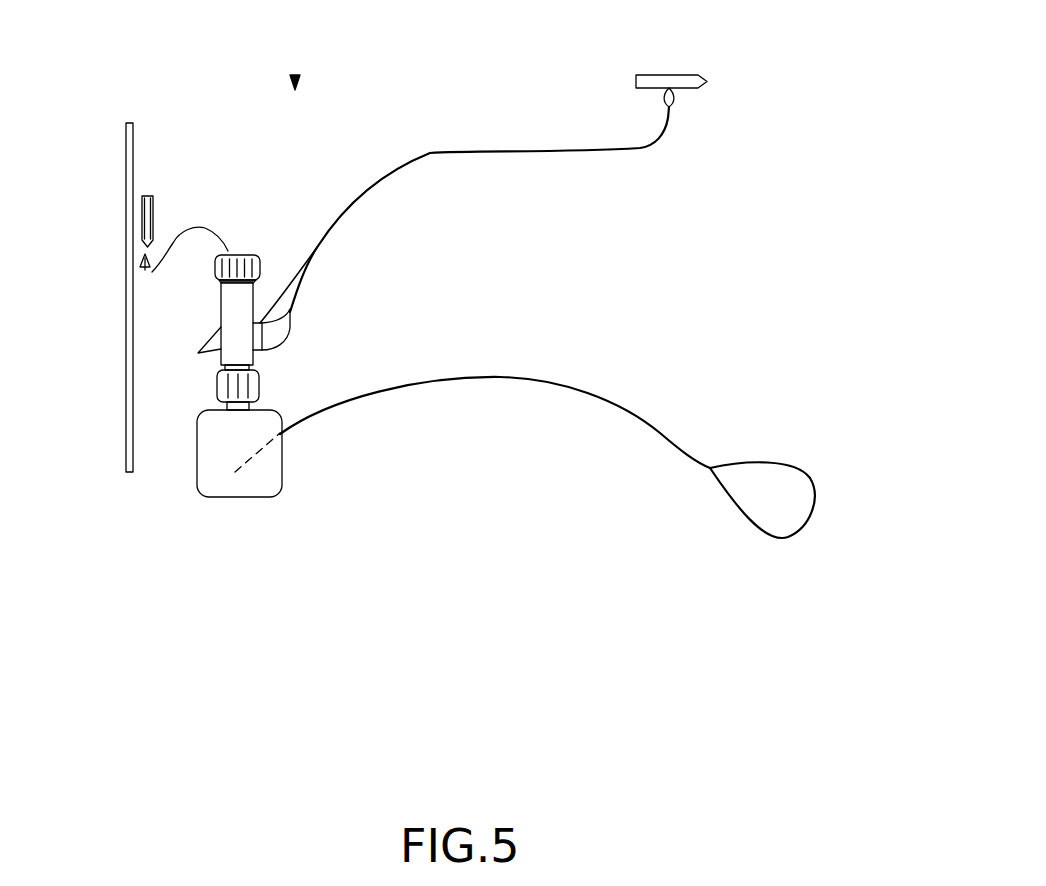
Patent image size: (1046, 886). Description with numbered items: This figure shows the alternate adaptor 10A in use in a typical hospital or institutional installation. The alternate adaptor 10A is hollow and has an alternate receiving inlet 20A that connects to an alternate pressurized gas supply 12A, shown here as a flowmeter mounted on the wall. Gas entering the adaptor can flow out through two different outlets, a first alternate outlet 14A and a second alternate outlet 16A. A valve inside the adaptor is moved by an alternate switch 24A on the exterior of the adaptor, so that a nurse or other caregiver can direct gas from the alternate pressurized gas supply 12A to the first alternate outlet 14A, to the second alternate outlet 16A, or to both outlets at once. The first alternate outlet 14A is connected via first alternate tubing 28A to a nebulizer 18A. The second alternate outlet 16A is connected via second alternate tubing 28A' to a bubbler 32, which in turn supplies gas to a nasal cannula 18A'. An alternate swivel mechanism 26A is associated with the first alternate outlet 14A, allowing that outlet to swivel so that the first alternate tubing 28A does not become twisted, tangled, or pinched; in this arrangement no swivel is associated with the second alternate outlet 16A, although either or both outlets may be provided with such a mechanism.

The alternate adaptor 10A is at (297, 74).
The alternate pressurized gas supply 12A is at (152, 200).
The first alternate outlet 14A is at (290, 318).
The second alternate outlet 16A is at (260, 387).
The nebulizer 18A is at (691, 63).
The nasal cannula 18A' is at (808, 475).
The alternate receiving inlet 20A is at (217, 273).
The alternate switch 24A is at (210, 338).
The alternate swivel mechanism 26A is at (298, 278).
The first alternate tubing 28A is at (479, 209).
The second alternate tubing 28A' is at (495, 389).
The bubbler 32 is at (282, 464).